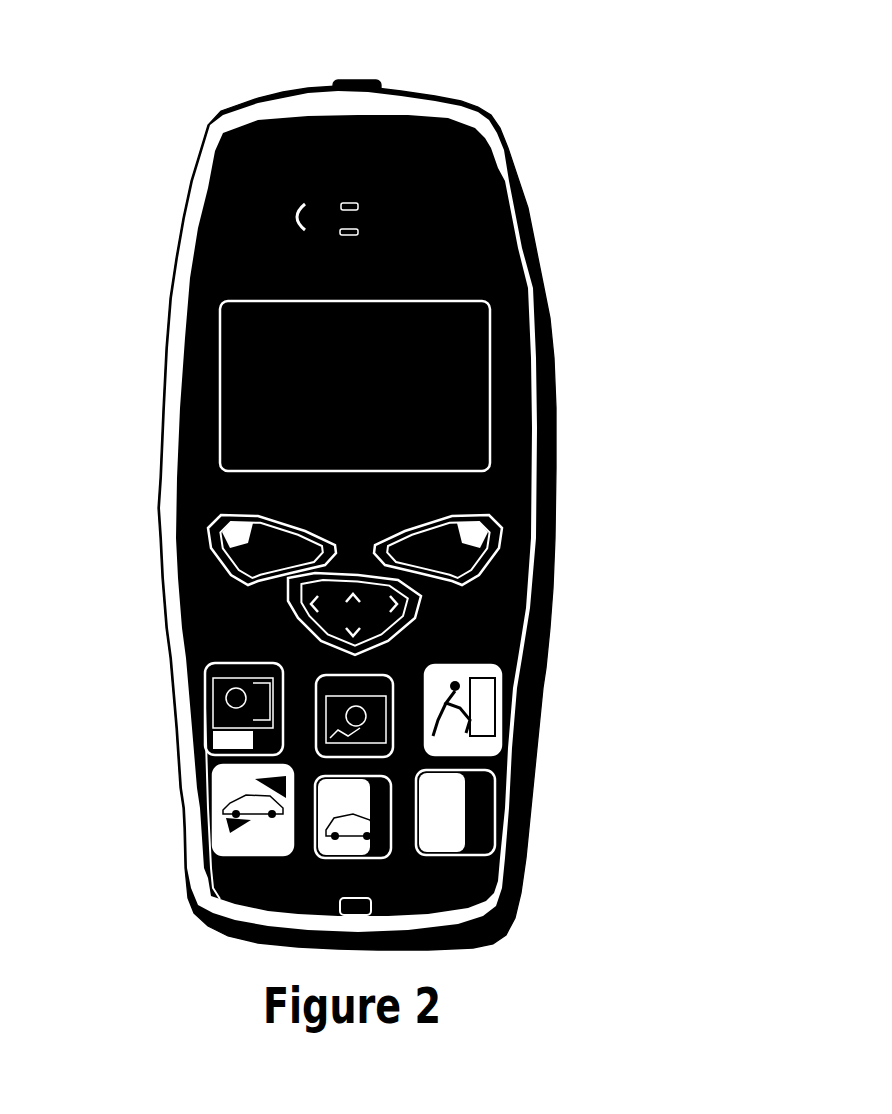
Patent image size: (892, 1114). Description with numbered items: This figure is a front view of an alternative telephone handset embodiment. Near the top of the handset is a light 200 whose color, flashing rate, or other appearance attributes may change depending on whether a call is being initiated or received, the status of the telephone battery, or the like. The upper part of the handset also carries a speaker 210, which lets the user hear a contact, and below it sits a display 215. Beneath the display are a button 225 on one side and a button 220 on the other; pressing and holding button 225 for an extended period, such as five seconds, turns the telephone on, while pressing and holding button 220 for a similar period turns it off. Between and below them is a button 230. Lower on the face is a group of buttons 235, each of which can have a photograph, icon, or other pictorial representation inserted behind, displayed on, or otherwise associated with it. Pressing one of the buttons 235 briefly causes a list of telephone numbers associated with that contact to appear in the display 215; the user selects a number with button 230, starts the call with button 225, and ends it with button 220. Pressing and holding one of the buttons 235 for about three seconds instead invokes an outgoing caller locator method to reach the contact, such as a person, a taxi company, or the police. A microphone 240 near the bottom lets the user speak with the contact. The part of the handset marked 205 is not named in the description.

The light 200 is at (414, 508).
The housing 205 is at (500, 152).
The speaker 210 is at (417, 212).
The display 215 is at (482, 395).
The button 220 is at (480, 538).
The button 225 is at (227, 538).
The button 230 is at (283, 597).
The buttons 235 is at (203, 693).
The microphone 240 is at (317, 910).